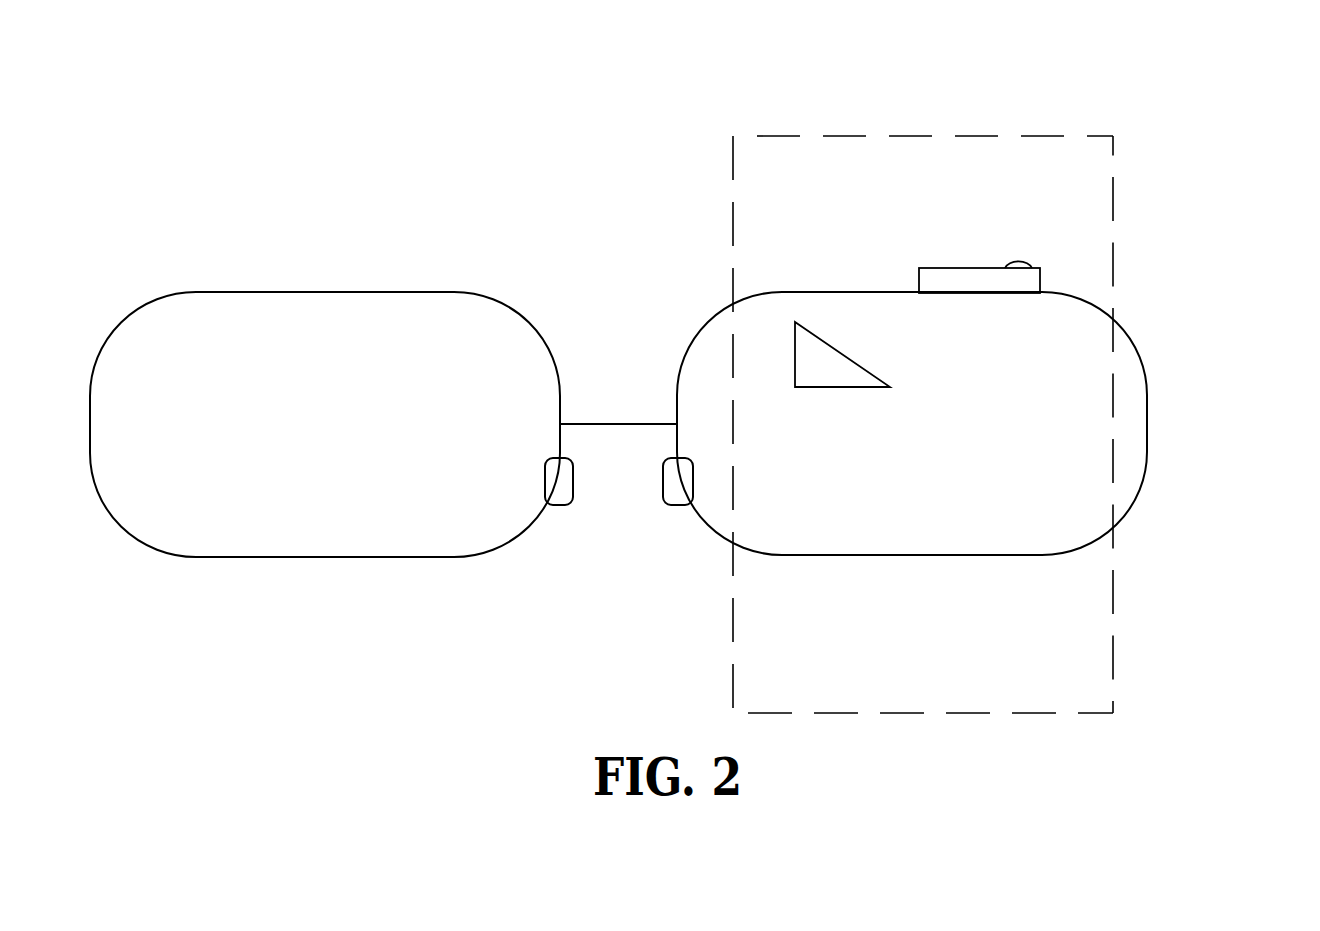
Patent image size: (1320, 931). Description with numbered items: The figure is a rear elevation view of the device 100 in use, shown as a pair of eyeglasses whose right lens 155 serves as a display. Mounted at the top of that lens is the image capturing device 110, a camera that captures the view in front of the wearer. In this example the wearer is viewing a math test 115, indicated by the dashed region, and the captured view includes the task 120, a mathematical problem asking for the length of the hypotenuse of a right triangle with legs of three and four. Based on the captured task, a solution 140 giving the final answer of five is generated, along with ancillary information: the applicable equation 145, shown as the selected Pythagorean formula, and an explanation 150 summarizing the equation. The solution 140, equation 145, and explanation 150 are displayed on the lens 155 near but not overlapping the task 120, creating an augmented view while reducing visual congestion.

The device 100 is at (250, 121).
The image capturing device 110 is at (1030, 267).
The math test 115 is at (1013, 135).
The task 120 is at (873, 310).
The solution 140 is at (1058, 386).
The equation 145 is at (1072, 317).
The explanation 150 is at (1082, 421).
The lens 155 is at (793, 278).